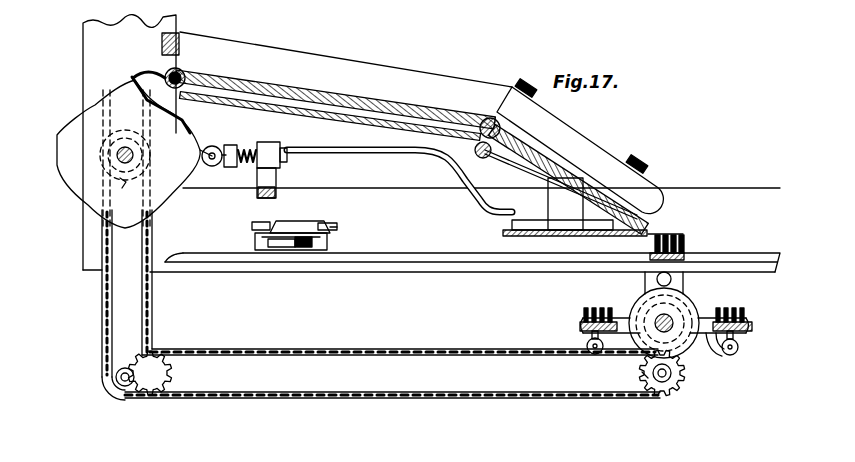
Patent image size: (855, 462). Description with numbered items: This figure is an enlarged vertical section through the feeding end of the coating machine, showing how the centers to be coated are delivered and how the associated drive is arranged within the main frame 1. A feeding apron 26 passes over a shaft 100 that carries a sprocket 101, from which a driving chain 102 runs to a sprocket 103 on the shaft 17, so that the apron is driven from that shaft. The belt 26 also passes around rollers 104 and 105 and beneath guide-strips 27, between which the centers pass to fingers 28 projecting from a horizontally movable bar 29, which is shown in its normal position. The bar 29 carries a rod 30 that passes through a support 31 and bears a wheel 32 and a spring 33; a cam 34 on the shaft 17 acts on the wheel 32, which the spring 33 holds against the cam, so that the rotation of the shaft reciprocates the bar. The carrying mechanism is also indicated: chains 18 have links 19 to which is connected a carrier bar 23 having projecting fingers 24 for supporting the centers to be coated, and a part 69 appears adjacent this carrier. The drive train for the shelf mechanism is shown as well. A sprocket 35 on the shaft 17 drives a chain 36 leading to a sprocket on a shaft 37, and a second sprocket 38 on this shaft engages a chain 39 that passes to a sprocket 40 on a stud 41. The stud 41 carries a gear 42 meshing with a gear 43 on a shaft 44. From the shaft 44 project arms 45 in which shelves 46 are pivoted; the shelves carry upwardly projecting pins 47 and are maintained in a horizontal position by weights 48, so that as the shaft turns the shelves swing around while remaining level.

The main frame 1 is at (431, 143).
The shaft 17 is at (116, 158).
The chains 18 is at (330, 228).
The links 19 is at (255, 241).
The carrier bar 23 is at (307, 250).
The projecting fingers 24 is at (300, 250).
The feeding apron 26 is at (365, 100).
The guide-strips 27 is at (585, 150).
The fingers 28 is at (675, 227).
The horizontally movable bar 29 is at (508, 234).
The rod 30 is at (380, 153).
The support 31 is at (268, 145).
The wheel 32 is at (220, 136).
The spring 33 is at (246, 168).
The cam 34 is at (86, 130).
The sprocket 35 is at (117, 153).
The chain 36 is at (102, 322).
The shaft 37 is at (112, 382).
The second sprocket 38 is at (150, 378).
The chain 39 is at (383, 350).
The sprocket 40 is at (676, 392).
The stud 41 is at (672, 373).
The gear 42 is at (642, 374).
The gear 43 is at (649, 306).
The shaft 44 is at (670, 317).
The arms 45 is at (722, 356).
The shelves 46 is at (580, 326).
The pins 47 is at (686, 251).
The weights 48 is at (738, 349).
The cover 69 is at (300, 219).
The shaft 100 is at (182, 76).
The sprocket 101 is at (160, 75).
The driving chain 102 is at (133, 78).
The sprocket 103 is at (124, 191).
The roller 104 is at (491, 122).
The roller 105 is at (633, 197).